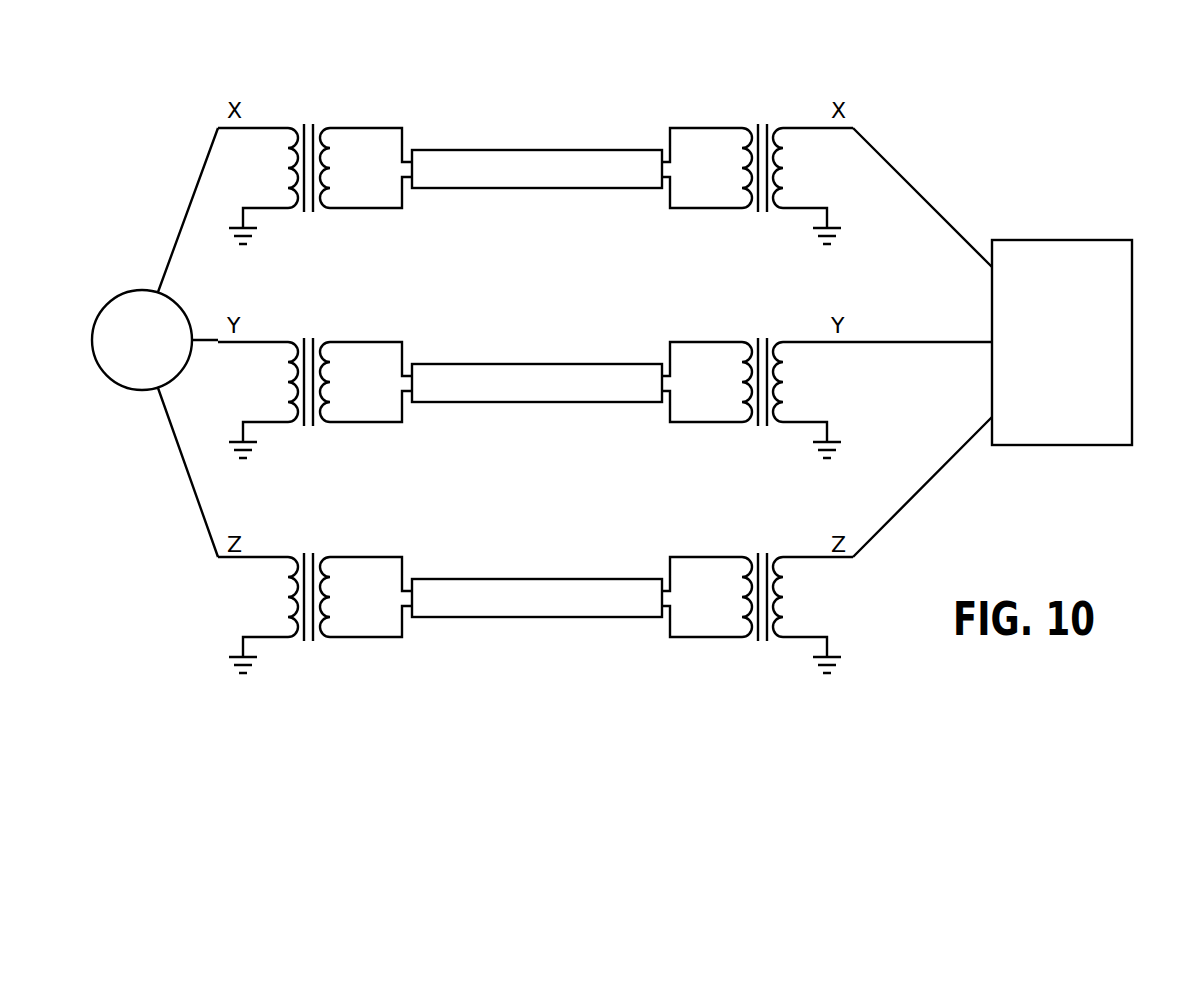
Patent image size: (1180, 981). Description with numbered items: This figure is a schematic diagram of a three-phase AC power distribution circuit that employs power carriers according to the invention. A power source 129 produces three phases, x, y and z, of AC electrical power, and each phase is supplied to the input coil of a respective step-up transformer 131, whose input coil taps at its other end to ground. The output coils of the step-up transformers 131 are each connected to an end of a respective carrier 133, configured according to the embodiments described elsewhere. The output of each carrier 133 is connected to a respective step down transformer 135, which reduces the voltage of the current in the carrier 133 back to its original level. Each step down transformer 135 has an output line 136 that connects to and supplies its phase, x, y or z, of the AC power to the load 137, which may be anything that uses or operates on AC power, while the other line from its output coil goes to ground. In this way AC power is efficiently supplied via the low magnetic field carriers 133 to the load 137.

The three-phase power source 129 is at (137, 357).
The step-up transformer 131 is at (310, 112).
The carrier 133 is at (527, 166).
The step down transformer 135 is at (765, 109).
The output line 136 is at (894, 168).
The load 137 is at (1085, 352).